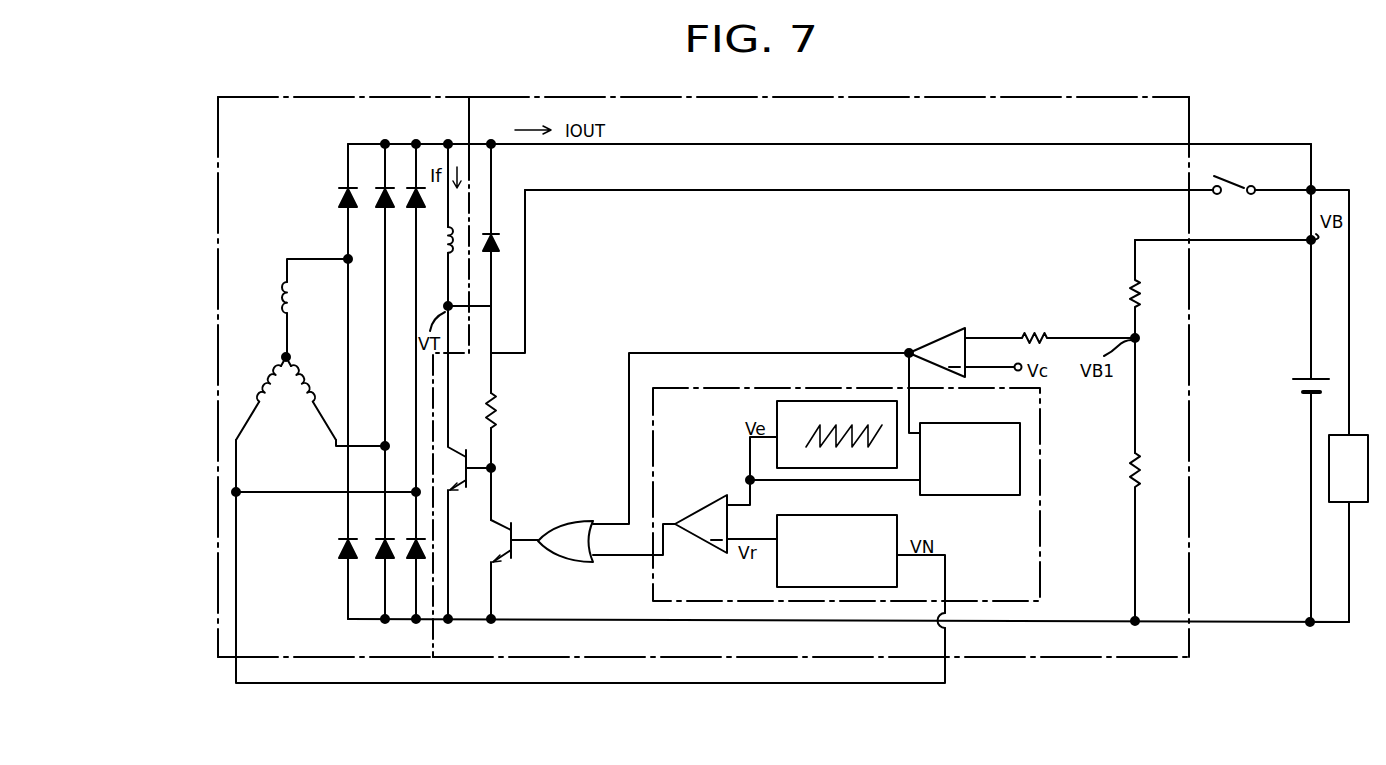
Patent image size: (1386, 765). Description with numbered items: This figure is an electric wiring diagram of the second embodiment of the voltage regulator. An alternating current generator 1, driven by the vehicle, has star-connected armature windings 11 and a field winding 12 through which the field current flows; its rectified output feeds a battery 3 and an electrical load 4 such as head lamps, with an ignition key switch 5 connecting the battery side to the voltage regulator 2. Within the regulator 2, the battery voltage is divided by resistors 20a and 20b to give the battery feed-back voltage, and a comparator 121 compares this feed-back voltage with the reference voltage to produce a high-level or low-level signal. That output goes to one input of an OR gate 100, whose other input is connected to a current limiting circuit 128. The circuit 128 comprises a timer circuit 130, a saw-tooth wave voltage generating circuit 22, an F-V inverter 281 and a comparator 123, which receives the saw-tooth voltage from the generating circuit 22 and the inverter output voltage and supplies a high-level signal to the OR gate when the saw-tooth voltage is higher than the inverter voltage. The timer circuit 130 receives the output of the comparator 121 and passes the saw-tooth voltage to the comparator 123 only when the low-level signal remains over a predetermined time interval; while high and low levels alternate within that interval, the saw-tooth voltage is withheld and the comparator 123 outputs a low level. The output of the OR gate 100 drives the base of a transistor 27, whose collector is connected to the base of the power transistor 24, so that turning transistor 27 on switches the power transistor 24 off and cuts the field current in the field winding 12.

The alternating current generator 1 is at (352, 97).
The voltage regulator 2 is at (726, 97).
The battery 3 is at (1314, 378).
The electrical load 4 is at (1340, 496).
The ignition key switch 5 is at (1233, 180).
The armature windings 11 is at (283, 300).
The field winding 12 is at (447, 256).
The resistor 20a is at (1128, 293).
The resistor 20b is at (1128, 470).
The saw-tooth wave voltage generating circuit 22 is at (777, 408).
The power transistor 24 is at (457, 492).
The transistor 27 is at (504, 566).
The OR gate 100 is at (567, 521).
The comparator 121 is at (941, 337).
The comparator 123 is at (700, 500).
The current limiting circuit 128 is at (1040, 442).
The timer circuit 130 is at (988, 495).
The F-V inverter 281 is at (833, 515).